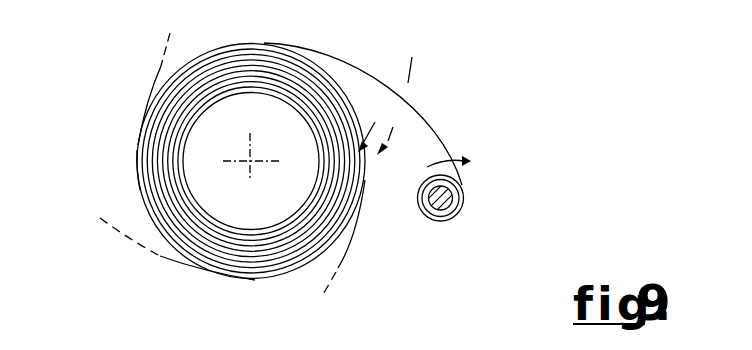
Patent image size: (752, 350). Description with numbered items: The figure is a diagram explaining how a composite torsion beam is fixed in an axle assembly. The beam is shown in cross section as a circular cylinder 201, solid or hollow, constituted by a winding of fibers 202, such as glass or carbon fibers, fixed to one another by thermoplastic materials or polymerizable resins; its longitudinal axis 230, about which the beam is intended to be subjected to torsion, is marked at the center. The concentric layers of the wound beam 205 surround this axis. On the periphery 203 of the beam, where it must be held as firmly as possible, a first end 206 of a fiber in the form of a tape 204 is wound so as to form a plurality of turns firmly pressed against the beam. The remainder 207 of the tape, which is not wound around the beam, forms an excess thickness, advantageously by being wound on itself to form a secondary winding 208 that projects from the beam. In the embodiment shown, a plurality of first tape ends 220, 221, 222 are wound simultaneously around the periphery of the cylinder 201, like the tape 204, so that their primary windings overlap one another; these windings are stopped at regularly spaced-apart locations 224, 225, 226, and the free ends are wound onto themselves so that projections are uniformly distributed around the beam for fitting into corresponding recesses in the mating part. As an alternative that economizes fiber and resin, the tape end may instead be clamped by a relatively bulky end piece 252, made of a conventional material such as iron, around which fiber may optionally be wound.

The circular cylinder 201 is at (132, 174).
The winding of fibers 202 is at (283, 257).
The periphery 203 is at (312, 240).
The tape 204 is at (373, 73).
The wound web layers 205 is at (237, 60).
The first end 206 is at (382, 126).
The remainder of the tape 207 is at (453, 223).
The secondary winding 208 is at (475, 169).
The first tape end 220 is at (348, 257).
The first tape end 221 is at (133, 253).
The first tape end 222 is at (168, 36).
The spaced-apart location 224 is at (366, 158).
The spaced-apart location 225 is at (220, 273).
The spaced-apart location 226 is at (137, 150).
The longitudinal axis 230 is at (234, 156).
The end piece 252 is at (447, 204).